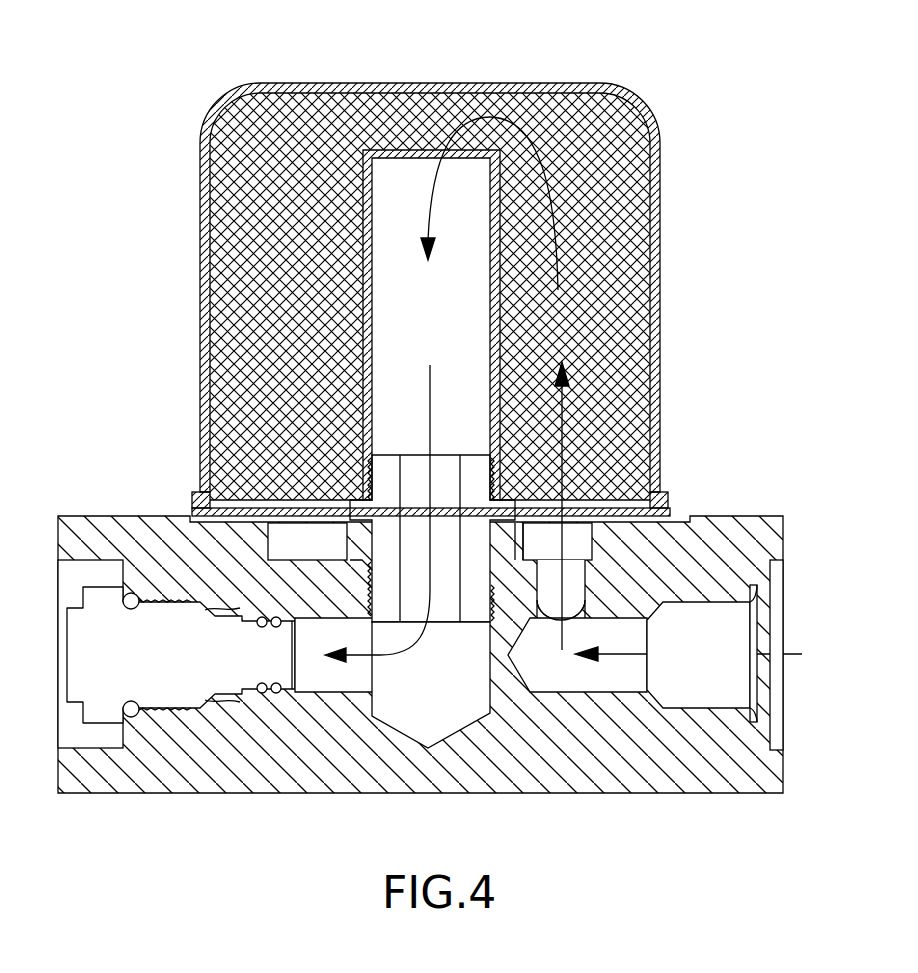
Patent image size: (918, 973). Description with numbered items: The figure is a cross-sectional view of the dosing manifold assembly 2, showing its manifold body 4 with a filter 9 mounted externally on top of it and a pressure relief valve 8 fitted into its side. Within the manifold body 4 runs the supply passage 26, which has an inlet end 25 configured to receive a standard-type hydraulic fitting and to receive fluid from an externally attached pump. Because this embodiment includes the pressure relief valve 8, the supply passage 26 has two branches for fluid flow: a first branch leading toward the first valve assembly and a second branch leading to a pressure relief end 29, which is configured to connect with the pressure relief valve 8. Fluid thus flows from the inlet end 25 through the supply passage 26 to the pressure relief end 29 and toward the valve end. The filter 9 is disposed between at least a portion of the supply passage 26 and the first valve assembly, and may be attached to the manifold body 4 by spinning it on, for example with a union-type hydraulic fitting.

The dosing manifold assembly 2 is at (446, 433).
The manifold body 4 is at (208, 793).
The pressure relief valve 8 is at (105, 695).
The filter 9 is at (560, 82).
The inlet end 25 is at (727, 690).
The supply passage 26 is at (442, 703).
The pressure relief end 29 is at (313, 670).